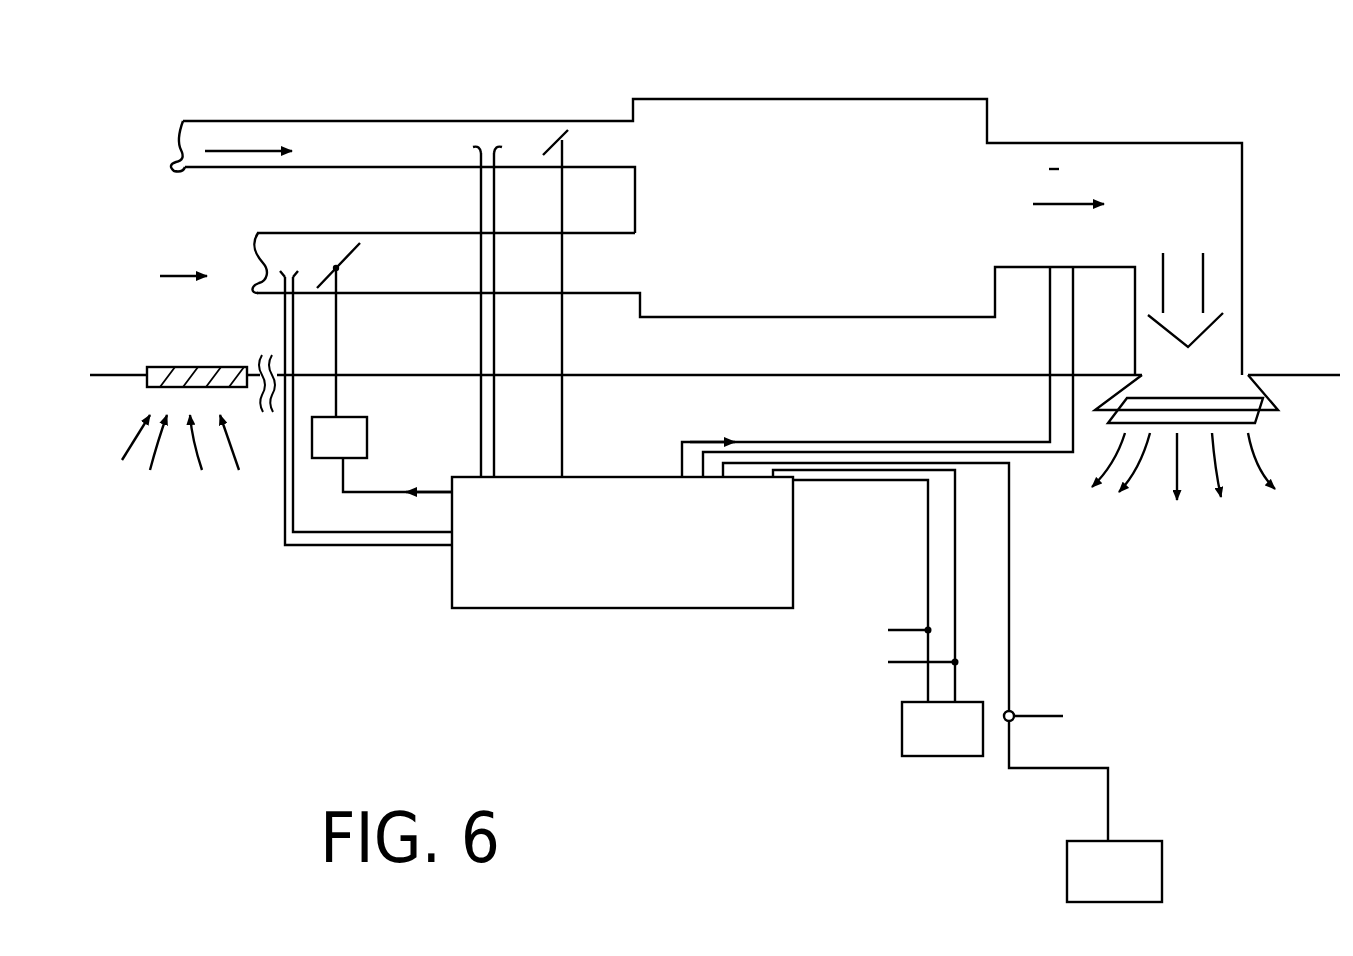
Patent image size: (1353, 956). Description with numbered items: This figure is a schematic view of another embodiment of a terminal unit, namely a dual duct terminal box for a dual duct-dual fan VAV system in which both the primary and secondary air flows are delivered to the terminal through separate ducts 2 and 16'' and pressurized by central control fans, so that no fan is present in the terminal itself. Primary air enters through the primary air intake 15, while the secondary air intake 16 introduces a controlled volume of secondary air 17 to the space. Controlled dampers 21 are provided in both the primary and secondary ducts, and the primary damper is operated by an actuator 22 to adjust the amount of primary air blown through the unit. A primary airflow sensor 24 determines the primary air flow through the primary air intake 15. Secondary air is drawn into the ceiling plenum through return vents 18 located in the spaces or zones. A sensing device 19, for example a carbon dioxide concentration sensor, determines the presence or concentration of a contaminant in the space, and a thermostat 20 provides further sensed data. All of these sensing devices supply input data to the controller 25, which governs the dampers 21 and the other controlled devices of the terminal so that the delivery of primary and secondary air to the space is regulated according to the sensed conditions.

The primary air duct 2 is at (267, 232).
The primary air intake 15 is at (317, 232).
The secondary air intake 16 is at (712, 219).
The secondary air duct 16'' is at (221, 114).
The secondary air 17 is at (282, 150).
The return vents 18 is at (180, 413).
The sensing device 19 is at (1165, 875).
The thermostat 20 is at (948, 757).
The damper 21 is at (563, 123).
The actuator 22 is at (367, 425).
The primary airflow sensor 24 is at (485, 135).
The controller 25 is at (592, 610).